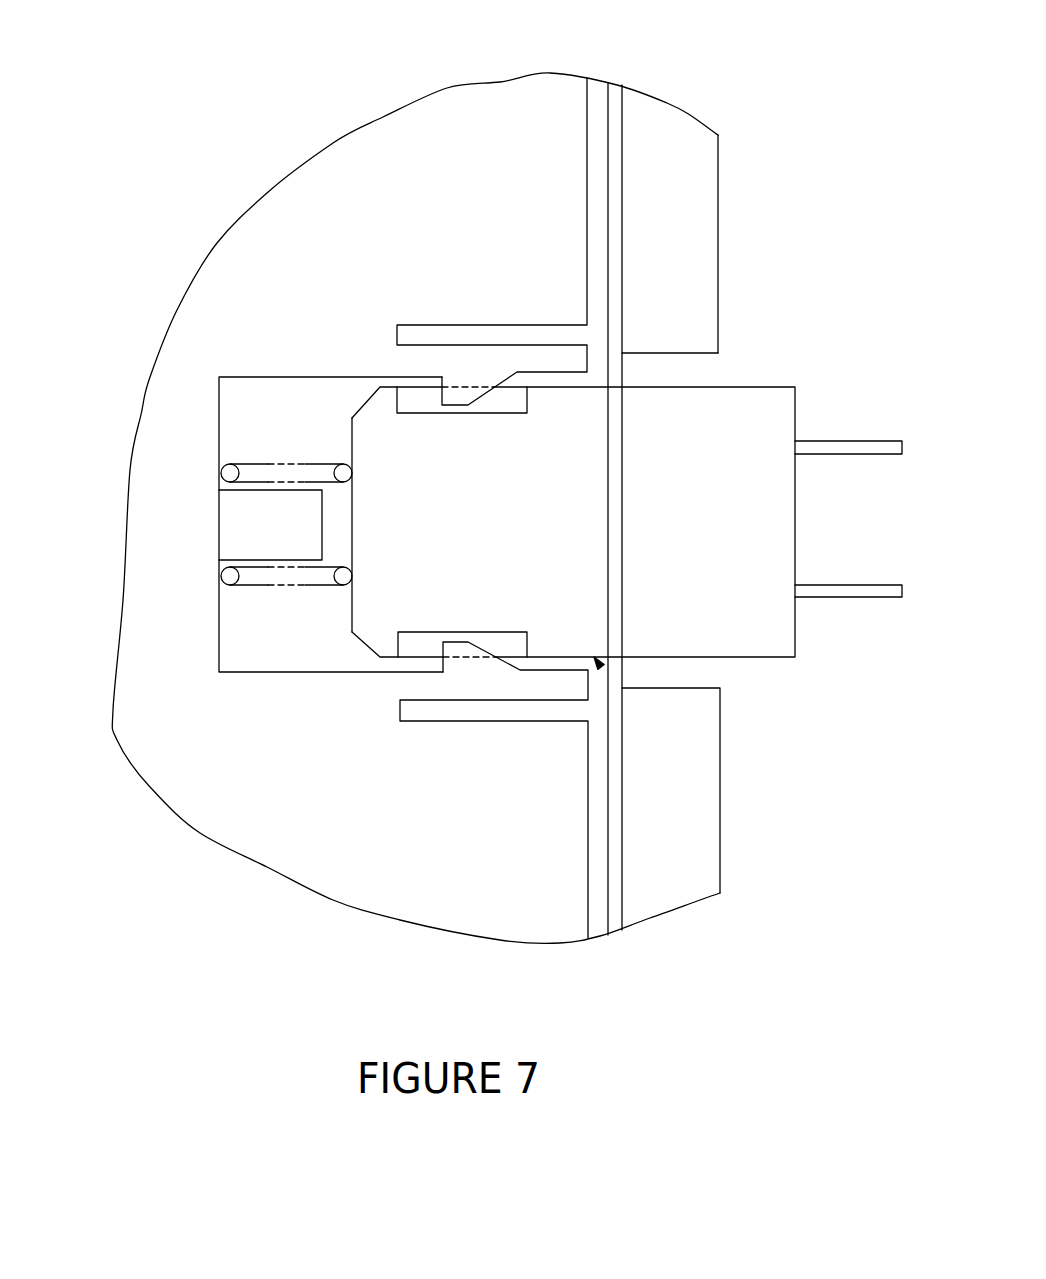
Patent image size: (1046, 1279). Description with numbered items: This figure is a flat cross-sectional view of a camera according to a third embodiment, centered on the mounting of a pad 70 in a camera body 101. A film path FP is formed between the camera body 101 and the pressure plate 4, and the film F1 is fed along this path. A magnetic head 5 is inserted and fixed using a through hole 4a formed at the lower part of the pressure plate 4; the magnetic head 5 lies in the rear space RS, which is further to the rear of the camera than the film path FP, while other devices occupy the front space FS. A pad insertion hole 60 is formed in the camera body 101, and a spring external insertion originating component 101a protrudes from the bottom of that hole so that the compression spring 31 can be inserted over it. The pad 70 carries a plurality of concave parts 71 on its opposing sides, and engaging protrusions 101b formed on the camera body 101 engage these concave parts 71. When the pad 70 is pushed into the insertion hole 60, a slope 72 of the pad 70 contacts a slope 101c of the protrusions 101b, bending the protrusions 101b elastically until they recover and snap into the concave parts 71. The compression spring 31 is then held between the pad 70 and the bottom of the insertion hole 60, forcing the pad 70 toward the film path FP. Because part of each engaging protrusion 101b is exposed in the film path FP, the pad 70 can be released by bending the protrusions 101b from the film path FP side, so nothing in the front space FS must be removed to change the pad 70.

The camera body 101 is at (333, 873).
The spring external insertion originating component 101a is at (253, 548).
The engaging protrusions 101b is at (537, 358).
The slope of the protrusions 101c is at (483, 395).
The pad insertion hole 60 is at (250, 415).
The compression spring 31 is at (320, 460).
The concave parts 71 is at (413, 407).
The slope of the pad 72 is at (362, 645).
The pad 70 is at (601, 668).
The pressure plate 4 is at (718, 178).
The through hole 4a is at (693, 372).
The magnetic head 5 is at (795, 637).
The film path FP is at (598, 822).
The film F1 is at (620, 902).
The front space FS is at (282, 637).
The rear space RS is at (905, 643).